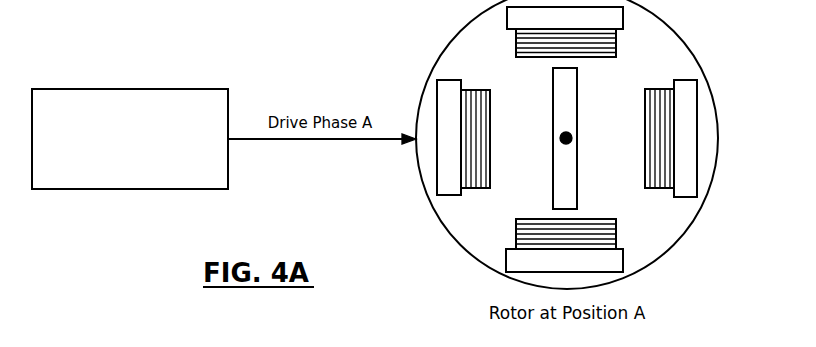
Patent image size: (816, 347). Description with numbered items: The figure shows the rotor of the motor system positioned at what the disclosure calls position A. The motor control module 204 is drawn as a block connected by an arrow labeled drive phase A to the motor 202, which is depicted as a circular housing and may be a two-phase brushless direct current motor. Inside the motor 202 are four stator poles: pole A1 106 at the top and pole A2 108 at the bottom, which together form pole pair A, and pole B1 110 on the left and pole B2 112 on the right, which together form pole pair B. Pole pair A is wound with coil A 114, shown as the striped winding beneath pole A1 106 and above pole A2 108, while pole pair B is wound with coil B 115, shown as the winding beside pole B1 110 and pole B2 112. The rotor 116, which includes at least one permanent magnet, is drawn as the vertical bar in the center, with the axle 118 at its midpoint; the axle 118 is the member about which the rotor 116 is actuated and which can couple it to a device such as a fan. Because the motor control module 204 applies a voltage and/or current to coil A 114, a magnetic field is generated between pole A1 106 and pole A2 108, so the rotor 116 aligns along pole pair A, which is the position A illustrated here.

The motor 202 is at (693, 55).
The motor control module 204 is at (135, 89).
The pole A1 106 is at (507, 21).
The pole A2 108 is at (506, 259).
The pole B1 110 is at (449, 80).
The pole B2 112 is at (685, 80).
The stator coil A 114 is at (540, 57).
The stator coil B 115 is at (477, 188).
The rotor 116 is at (577, 176).
The axle 118 is at (560, 138).